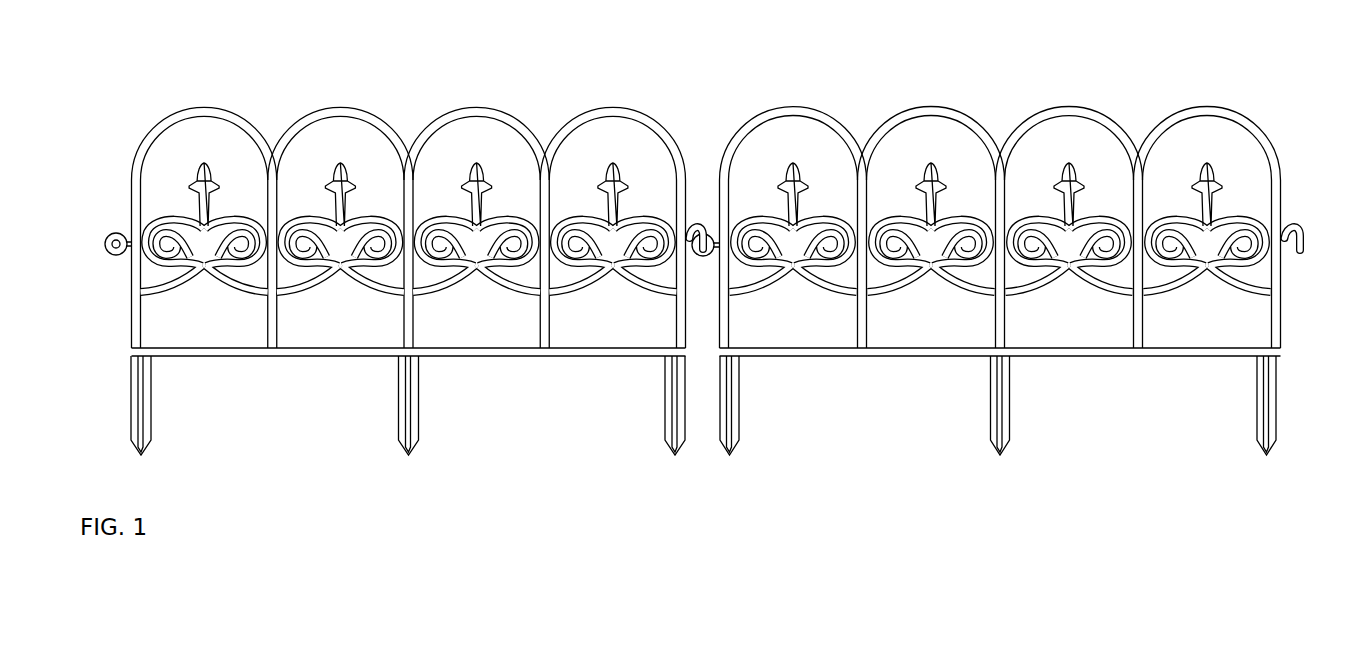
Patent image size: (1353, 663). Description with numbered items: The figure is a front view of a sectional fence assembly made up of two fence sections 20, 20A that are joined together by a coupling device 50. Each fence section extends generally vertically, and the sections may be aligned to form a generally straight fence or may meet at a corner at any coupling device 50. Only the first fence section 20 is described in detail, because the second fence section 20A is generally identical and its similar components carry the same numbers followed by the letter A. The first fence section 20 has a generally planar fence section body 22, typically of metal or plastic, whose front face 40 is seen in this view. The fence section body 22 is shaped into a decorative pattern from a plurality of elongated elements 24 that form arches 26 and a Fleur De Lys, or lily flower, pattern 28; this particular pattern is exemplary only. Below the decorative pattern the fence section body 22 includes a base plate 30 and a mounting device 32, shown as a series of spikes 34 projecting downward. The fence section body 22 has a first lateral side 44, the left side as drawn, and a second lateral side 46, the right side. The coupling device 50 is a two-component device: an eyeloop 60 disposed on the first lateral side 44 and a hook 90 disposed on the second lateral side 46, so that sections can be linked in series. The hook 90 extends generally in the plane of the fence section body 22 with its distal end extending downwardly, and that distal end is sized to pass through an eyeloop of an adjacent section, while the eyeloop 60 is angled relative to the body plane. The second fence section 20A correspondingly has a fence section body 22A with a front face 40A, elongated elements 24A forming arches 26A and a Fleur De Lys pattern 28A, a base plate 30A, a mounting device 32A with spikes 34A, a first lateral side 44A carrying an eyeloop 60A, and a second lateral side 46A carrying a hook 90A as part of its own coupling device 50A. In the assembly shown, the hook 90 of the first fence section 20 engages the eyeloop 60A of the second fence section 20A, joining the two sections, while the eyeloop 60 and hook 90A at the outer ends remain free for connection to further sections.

The fence section 20 is at (259, 103).
The fence section body 22 is at (377, 120).
The front face 40 is at (523, 122).
The elongated elements 24 is at (130, 178).
The arches 26 is at (280, 187).
The Fleur De Lys pattern 28 is at (223, 283).
The base plate 30 is at (357, 348).
The mounting device 32 is at (120, 384).
The spikes 34 is at (150, 420).
The first lateral side 44 is at (130, 335).
The second lateral side 46 is at (677, 335).
The coupling device 50 is at (119, 219).
The eyeloop 60 is at (117, 275).
The hook 90 is at (718, 213).
The fence section 20A is at (833, 98).
The fence section body 22A is at (967, 118).
The front face 40A is at (1117, 122).
The elongated elements 24A is at (718, 180).
The arches 26A is at (865, 185).
The Fleur De Lys pattern 28A is at (837, 293).
The base plate 30A is at (975, 348).
The mounting device 32A is at (699, 454).
The spikes 34A is at (740, 422).
The first lateral side 44A is at (717, 332).
The second lateral side 46A is at (1278, 333).
The coupling device 50A is at (1286, 189).
The eyeloop 60A is at (722, 267).
The hook 90A is at (1289, 271).